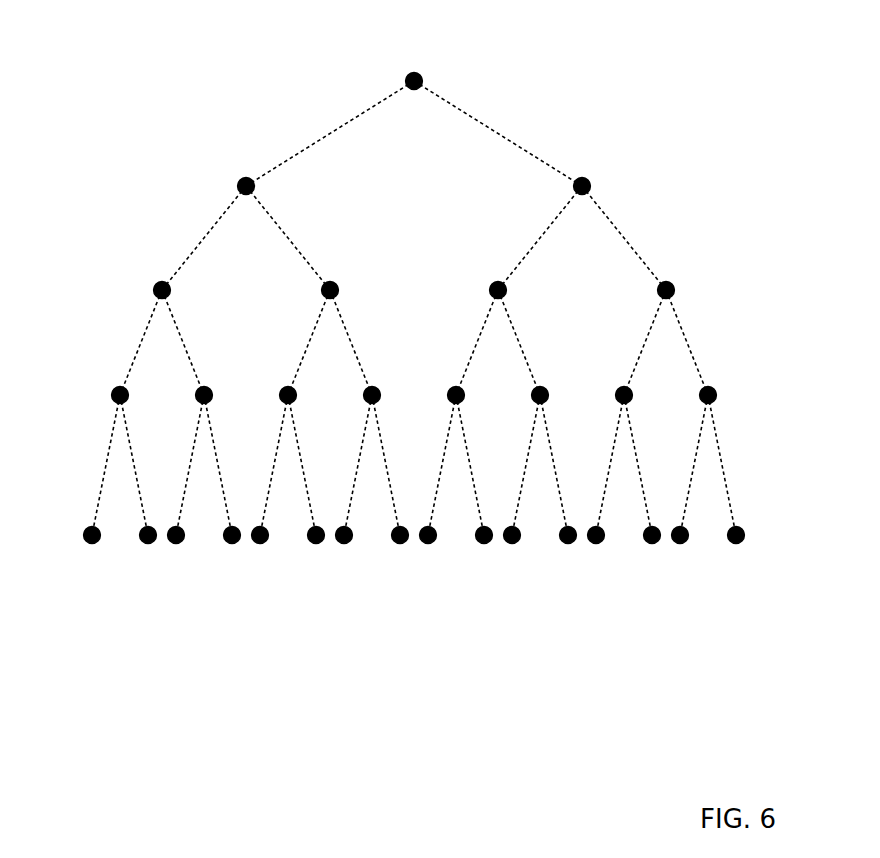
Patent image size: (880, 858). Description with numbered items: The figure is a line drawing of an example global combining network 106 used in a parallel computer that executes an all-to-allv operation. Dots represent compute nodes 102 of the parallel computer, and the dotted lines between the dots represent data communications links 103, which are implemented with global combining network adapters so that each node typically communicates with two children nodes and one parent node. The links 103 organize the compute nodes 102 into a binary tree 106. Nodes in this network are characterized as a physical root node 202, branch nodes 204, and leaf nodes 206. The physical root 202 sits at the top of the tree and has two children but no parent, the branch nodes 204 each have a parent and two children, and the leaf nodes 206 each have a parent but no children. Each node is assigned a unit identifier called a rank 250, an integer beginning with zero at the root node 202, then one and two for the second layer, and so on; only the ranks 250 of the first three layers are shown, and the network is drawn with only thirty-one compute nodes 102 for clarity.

The global combining network 106 is at (444, 386).
The data communications links 103 is at (340, 128).
The physical root node 202 is at (430, 72).
The branch nodes 204 is at (753, 135).
The leaf nodes 206 is at (464, 603).
The compute nodes 102 is at (484, 543).
The rank 250 is at (546, 195).